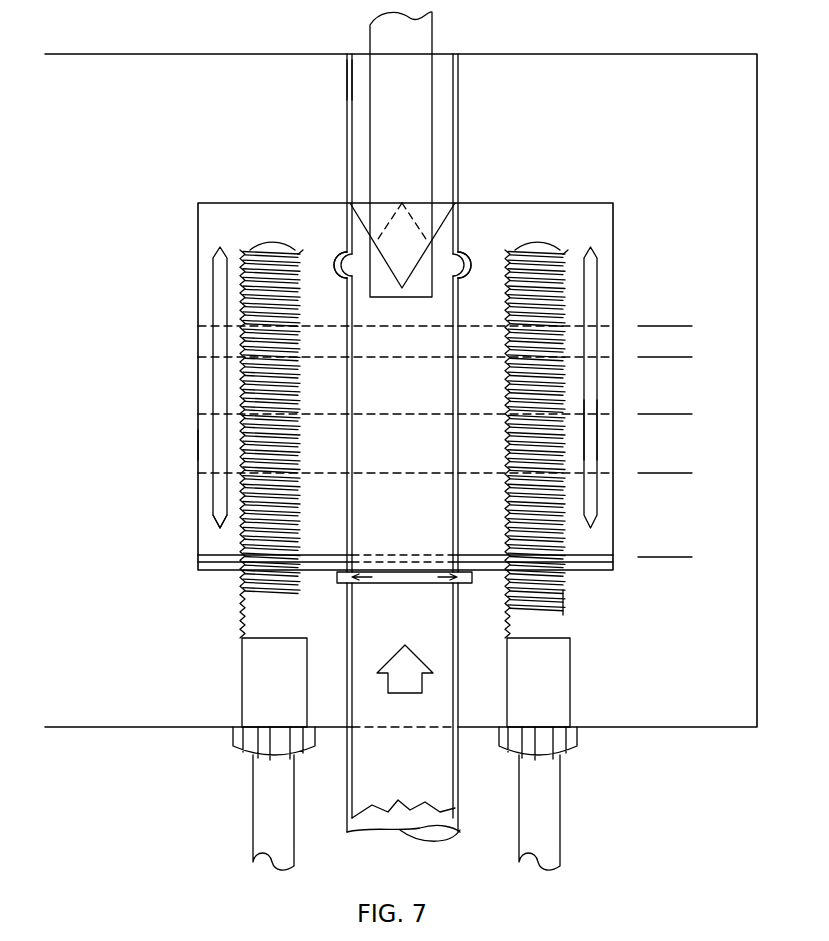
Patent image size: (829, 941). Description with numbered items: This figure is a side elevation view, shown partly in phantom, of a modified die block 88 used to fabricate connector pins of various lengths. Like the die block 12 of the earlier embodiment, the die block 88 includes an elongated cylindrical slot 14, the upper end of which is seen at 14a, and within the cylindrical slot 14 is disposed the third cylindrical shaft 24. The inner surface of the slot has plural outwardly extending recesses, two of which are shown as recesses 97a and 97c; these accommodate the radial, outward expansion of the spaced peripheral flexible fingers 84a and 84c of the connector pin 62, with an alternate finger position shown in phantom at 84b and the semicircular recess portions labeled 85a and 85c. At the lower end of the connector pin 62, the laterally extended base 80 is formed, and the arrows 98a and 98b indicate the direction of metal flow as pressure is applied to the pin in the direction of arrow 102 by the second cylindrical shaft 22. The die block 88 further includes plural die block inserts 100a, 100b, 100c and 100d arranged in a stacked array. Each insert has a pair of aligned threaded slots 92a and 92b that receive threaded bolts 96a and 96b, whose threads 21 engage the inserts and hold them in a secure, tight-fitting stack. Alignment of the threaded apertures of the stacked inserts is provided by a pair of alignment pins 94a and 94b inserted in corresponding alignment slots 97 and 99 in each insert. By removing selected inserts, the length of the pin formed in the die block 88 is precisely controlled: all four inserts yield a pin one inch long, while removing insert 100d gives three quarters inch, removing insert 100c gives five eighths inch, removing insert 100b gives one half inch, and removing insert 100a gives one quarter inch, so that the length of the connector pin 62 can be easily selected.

The die block 12 is at (264, 50).
The elongated cylindrical slot 14 is at (350, 383).
The slot upper end 14a is at (352, 80).
The third cylindrical shaft 24 is at (418, 67).
The modified die block 88 is at (235, 218).
The flexible finger 84a is at (357, 212).
The V-notch alternate edge 84b is at (407, 205).
The flexible finger 84c is at (460, 203).
The semicircular recess 85a is at (347, 270).
The semicircular recess 85c is at (462, 268).
The outwardly extending recess 97a is at (340, 268).
The outwardly extending recess 97c is at (492, 265).
The alignment slot 97 is at (203, 445).
The alignment pin 94a is at (217, 343).
The alignment pin 94b is at (596, 307).
The alignment slot 99 is at (592, 432).
The die block insert 100a is at (203, 347).
The die block insert 100b is at (215, 425).
The die block insert 100c is at (203, 477).
The die block insert 100d is at (210, 528).
The threaded slot 92a is at (262, 383).
The threaded slot 92b is at (548, 360).
The bolt threads 21 is at (550, 600).
The connector pin 62 is at (396, 383).
The laterally extended base 80 is at (412, 586).
The arrow 98a is at (355, 584).
The arrow 98b is at (455, 585).
The threaded bolt 96a is at (265, 675).
The threaded bolt 96b is at (555, 665).
The second cylindrical shaft 22 is at (399, 773).
The arrow 102 is at (425, 680).